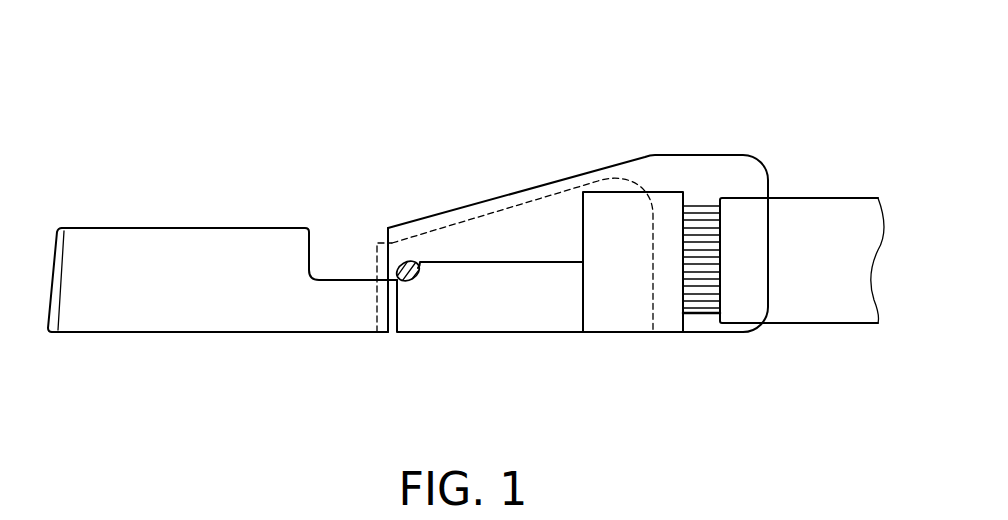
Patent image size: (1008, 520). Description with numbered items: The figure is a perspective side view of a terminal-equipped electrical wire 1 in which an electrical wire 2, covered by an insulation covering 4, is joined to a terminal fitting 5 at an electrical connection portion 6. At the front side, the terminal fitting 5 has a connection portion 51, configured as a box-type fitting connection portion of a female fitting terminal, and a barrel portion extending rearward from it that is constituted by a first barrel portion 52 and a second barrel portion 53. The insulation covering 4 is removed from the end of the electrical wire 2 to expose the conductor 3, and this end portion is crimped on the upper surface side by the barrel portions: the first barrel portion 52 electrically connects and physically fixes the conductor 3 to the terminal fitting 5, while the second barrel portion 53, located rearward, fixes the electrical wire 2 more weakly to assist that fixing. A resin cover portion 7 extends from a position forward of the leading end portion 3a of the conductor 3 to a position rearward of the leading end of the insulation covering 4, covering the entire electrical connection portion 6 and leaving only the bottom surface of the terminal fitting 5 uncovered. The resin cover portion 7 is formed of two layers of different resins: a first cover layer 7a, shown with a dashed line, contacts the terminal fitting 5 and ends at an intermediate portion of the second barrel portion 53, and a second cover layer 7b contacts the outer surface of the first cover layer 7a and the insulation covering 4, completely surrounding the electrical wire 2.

The terminal-equipped electrical wire 1 is at (466, 211).
The electrical wire 2 is at (636, 220).
The conductor 3 is at (700, 305).
The leading end portion of the conductor 3a is at (400, 263).
The insulation covering 4 is at (803, 298).
The terminal fitting 5 is at (365, 265).
The connection portion 51 is at (181, 303).
The first barrel portion 52 is at (502, 305).
The second barrel portion 53 is at (618, 296).
The electrical connection portion 6 is at (500, 193).
The resin cover portion 7 is at (630, 80).
The first cover layer 7a is at (516, 200).
The second cover layer 7b is at (590, 172).